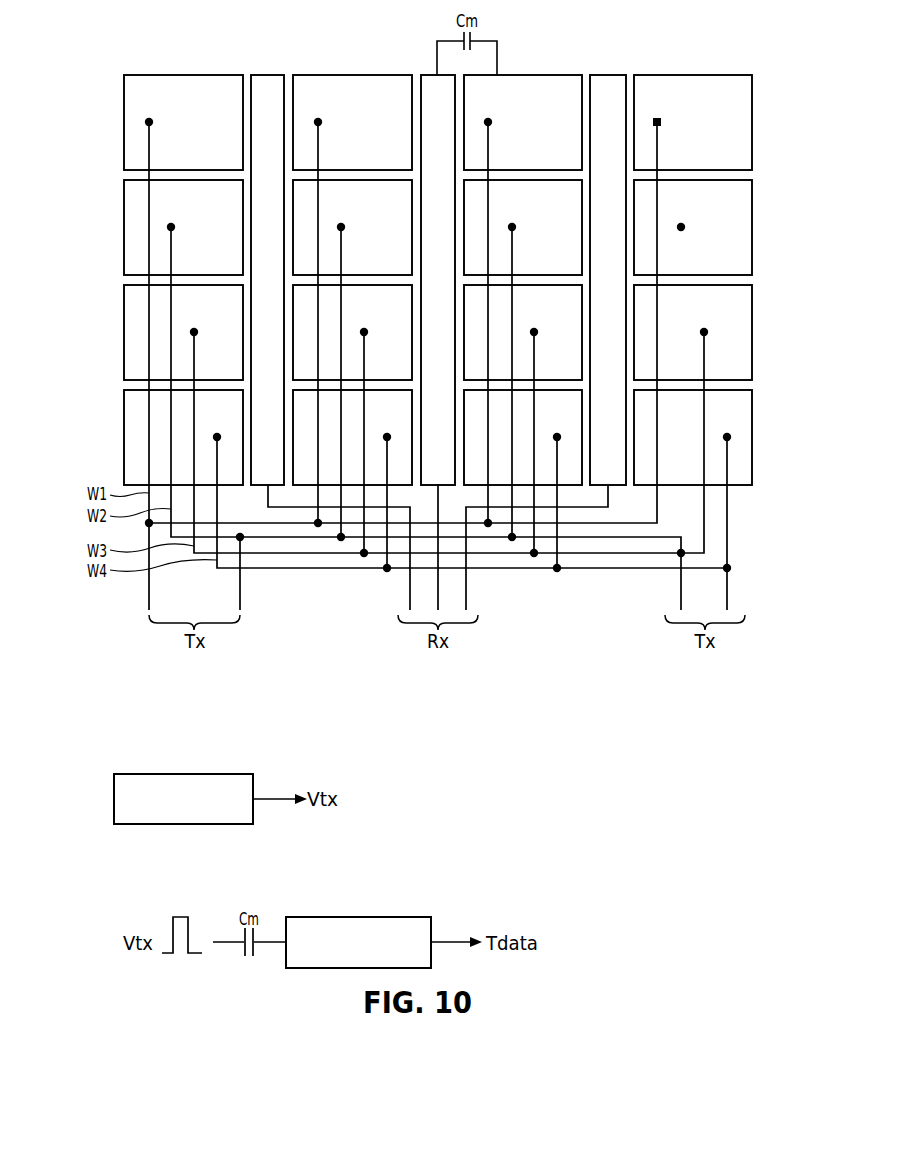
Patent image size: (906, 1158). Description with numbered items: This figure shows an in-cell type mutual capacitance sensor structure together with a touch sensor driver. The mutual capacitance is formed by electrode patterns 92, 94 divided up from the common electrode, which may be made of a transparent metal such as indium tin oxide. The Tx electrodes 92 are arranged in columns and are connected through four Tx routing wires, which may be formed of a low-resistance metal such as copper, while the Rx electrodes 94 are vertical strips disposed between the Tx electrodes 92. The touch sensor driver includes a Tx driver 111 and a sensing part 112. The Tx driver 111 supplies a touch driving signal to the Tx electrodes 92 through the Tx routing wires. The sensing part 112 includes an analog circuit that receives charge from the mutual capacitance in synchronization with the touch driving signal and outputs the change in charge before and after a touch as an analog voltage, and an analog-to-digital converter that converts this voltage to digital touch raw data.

The Tx electrodes 92 is at (183, 85).
The Rx electrodes 94 is at (268, 85).
The Tx driver 111 is at (183, 774).
The sensing part 112 is at (359, 917).